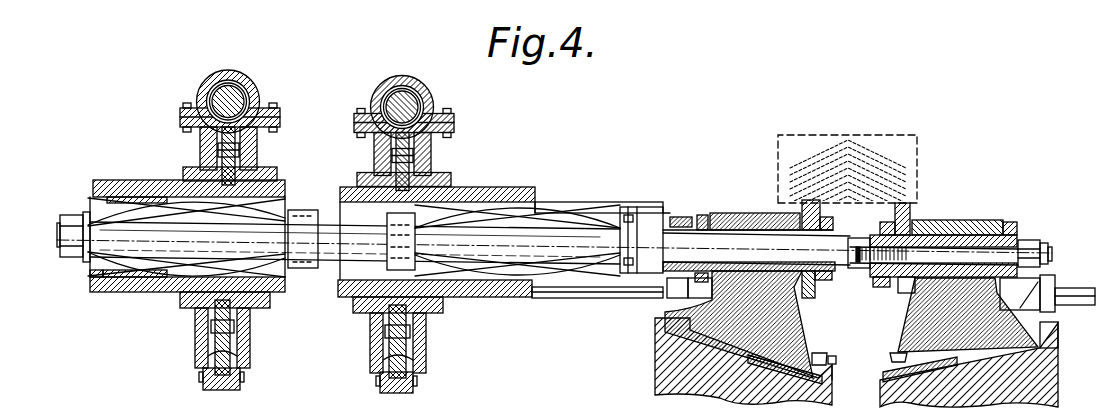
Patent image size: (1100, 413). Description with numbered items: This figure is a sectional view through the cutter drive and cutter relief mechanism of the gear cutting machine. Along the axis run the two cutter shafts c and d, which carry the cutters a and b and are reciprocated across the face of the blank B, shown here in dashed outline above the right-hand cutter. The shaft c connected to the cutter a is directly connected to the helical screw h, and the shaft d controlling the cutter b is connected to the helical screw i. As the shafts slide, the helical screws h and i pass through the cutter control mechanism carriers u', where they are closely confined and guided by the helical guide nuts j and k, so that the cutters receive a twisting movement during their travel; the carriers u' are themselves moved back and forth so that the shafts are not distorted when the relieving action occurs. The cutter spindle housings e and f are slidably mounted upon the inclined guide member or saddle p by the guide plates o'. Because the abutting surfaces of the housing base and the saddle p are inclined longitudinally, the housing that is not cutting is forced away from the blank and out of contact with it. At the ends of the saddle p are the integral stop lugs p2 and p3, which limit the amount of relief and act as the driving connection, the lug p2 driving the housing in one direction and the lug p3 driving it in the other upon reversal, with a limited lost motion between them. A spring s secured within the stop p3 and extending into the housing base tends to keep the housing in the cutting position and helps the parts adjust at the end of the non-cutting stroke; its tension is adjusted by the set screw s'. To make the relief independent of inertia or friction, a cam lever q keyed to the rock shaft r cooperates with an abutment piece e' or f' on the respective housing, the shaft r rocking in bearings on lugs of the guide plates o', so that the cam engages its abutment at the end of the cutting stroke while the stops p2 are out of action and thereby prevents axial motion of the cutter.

The helical screw h is at (103, 208).
The helical guide nut j is at (120, 288).
The cutter control mechanism carrier u' is at (289, 346).
The cutter shaft c is at (337, 253).
The helical guide nut k is at (490, 197).
The helical screw i is at (563, 208).
The cutter shaft d is at (692, 217).
The cutter spindle housing f is at (748, 199).
The cutter b is at (803, 207).
The blank B is at (907, 158).
The cutter a is at (912, 217).
The cutter spindle housing e is at (943, 234).
The abutment piece e' is at (1030, 264).
The cam lever q is at (1076, 292).
The rock shaft r is at (607, 297).
The abutment piece f' is at (646, 315).
The stop lug p2 is at (657, 328).
The inclined guide member (saddle) p is at (663, 360).
The spring s is at (857, 343).
The guide plate o' is at (844, 351).
The stop lug p3 is at (836, 370).
The set screw s' is at (852, 370).